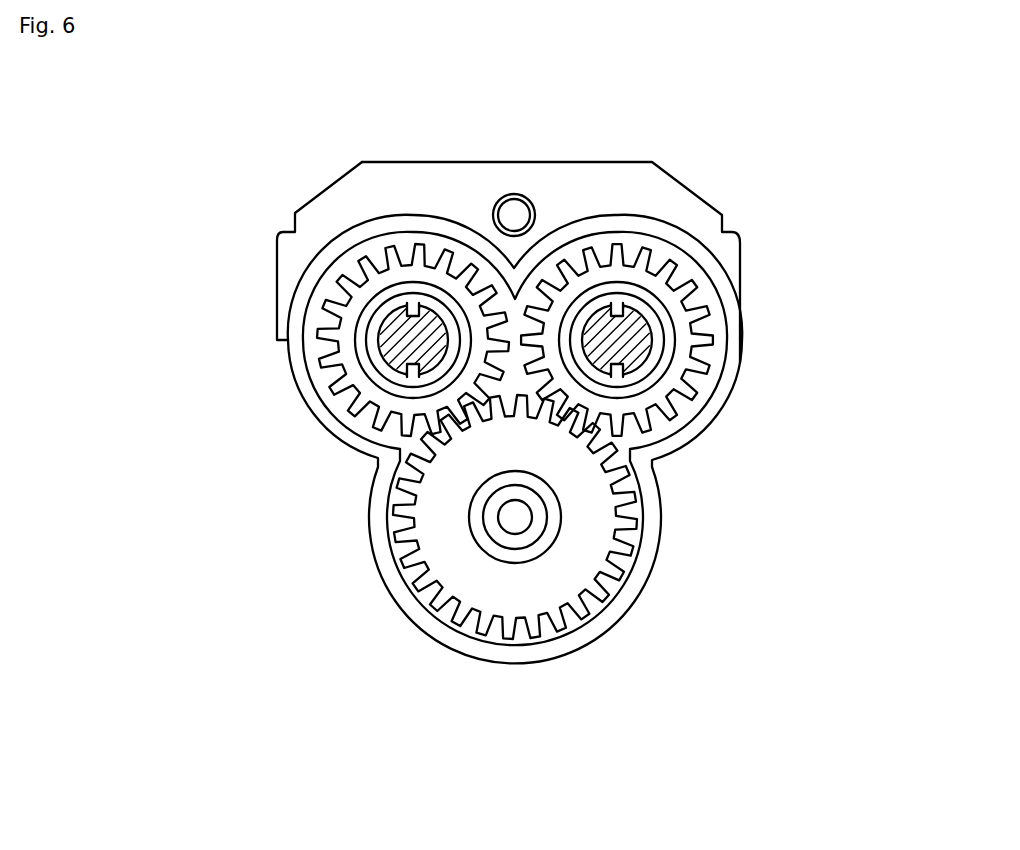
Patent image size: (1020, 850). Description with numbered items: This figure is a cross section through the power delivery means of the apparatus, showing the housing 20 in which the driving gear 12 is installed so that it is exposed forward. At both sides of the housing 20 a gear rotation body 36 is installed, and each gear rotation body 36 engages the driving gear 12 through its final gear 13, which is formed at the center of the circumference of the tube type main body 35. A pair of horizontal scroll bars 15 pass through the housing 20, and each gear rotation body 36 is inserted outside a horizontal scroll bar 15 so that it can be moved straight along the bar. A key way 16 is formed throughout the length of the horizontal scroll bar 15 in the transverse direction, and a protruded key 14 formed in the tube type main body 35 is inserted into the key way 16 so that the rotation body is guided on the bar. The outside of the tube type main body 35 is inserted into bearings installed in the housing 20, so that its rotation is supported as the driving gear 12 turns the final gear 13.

The driving gear 12 is at (529, 585).
The final gear 13 is at (380, 353).
The protruded key 14 is at (384, 330).
The horizontal scroll bar 15 is at (593, 393).
The key way 16 is at (617, 313).
The housing 20 is at (278, 298).
The tube type main body 35 is at (657, 340).
The gear rotation body 36 is at (645, 406).